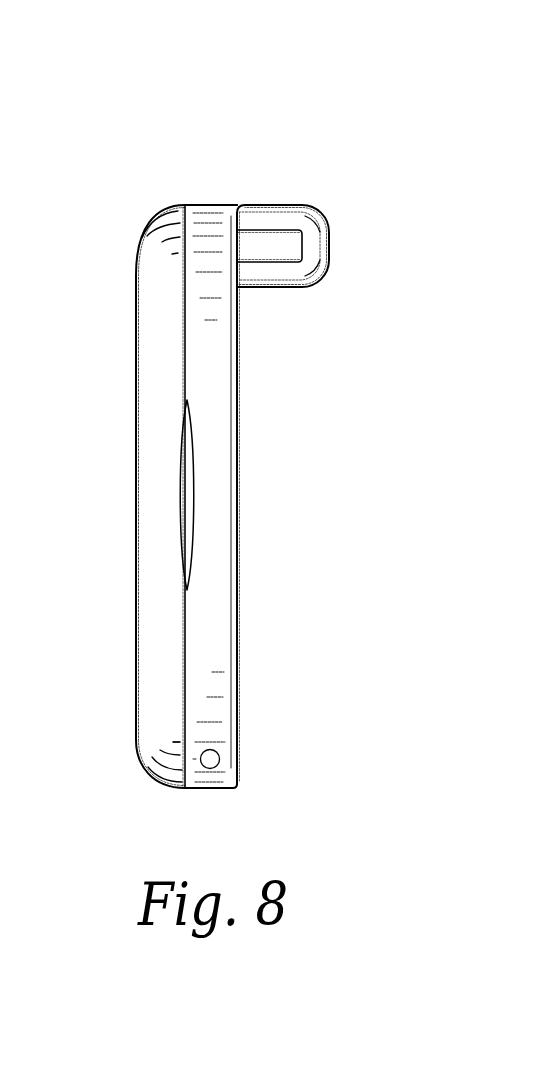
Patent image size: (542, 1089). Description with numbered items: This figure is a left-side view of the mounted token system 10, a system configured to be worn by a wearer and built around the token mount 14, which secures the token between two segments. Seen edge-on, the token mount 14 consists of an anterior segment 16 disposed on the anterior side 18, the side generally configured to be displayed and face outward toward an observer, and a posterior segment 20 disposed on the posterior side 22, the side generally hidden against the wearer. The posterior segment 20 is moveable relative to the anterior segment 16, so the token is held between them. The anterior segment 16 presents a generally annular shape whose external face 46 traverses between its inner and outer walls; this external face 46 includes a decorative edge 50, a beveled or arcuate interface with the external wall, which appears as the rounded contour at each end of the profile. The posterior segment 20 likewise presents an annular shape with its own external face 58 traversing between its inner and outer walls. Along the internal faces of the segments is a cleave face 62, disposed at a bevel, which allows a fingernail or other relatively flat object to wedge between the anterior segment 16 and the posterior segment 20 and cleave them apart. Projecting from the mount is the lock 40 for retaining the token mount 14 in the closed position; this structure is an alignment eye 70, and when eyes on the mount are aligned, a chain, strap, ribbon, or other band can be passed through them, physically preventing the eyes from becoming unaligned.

The mounted token system 10 is at (116, 67).
The token mount 14 is at (209, 133).
The anterior segment 16 is at (141, 541).
The anterior side 18 is at (74, 437).
The posterior segment 20 is at (225, 592).
The posterior side 22 is at (355, 529).
The lock 40 is at (360, 185).
The external face 46 is at (102, 310).
The decorative edge 50 is at (102, 187).
The external face 58 is at (279, 374).
The cleave face 62 is at (234, 465).
The alignment eye 70 is at (296, 255).